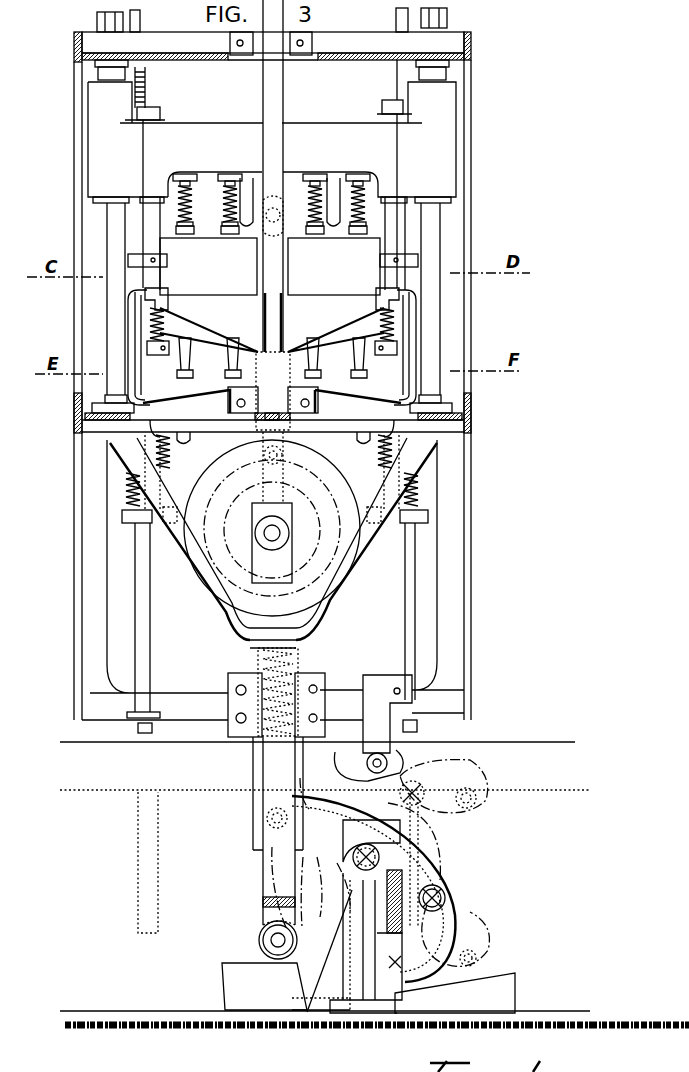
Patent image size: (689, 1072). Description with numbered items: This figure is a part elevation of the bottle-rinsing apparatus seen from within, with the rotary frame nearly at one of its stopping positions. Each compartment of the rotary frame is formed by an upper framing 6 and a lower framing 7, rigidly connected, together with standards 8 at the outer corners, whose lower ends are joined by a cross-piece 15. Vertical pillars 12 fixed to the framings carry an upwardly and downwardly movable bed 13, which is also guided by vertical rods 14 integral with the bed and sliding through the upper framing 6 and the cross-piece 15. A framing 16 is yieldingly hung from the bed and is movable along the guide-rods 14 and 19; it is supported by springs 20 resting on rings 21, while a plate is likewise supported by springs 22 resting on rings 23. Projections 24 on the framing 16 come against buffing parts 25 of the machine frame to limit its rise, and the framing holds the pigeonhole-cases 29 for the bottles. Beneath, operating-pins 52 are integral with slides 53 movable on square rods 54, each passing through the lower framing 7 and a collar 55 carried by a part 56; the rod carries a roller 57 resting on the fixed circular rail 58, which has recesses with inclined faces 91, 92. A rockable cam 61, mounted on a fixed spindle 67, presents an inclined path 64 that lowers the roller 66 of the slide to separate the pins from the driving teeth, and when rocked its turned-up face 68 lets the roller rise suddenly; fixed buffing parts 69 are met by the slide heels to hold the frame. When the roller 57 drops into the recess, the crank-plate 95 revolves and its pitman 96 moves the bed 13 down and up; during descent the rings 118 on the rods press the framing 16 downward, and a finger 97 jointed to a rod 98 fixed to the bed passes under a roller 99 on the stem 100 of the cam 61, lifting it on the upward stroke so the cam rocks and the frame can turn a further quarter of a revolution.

The upper framing 6 is at (225, 56).
The lower framing 7 is at (178, 397).
The standards 8 is at (466, 245).
The vertical pillars 12 is at (108, 236).
The bed 13 is at (327, 129).
The vertical rods 14 is at (139, 19).
The cross-piece 15 is at (174, 703).
The framing 16 is at (215, 342).
The guide-rods 19 is at (164, 223).
The springs 20 is at (168, 328).
The rings 21 is at (163, 357).
The springs 22 is at (170, 465).
The rings 23 is at (134, 525).
The projections 24 is at (168, 303).
The buffing parts 25 is at (135, 323).
The pigeonhole-cases 29 is at (270, 266).
The operating-pins 52 is at (287, 718).
The slides 53 is at (257, 787).
The square rods 54 is at (271, 772).
The collar 55 is at (314, 682).
The part 56 is at (198, 587).
The roller 57 is at (258, 938).
The circular rail 58 is at (230, 975).
The cams 61 is at (434, 842).
The inclined path 64 is at (330, 812).
The roller 66 is at (263, 822).
The fixed spindle 67 is at (337, 858).
The face 68 is at (393, 847).
The buffing parts 69 is at (402, 878).
The inclined face 91 is at (305, 972).
The inclined face 92 is at (426, 990).
The crank-plate 95 is at (317, 489).
The pitman 96 is at (285, 322).
The finger 97 is at (351, 766).
The rod 98 is at (395, 614).
The roller 99 is at (447, 898).
The stem 100 is at (446, 927).
The rings 118 is at (130, 261).